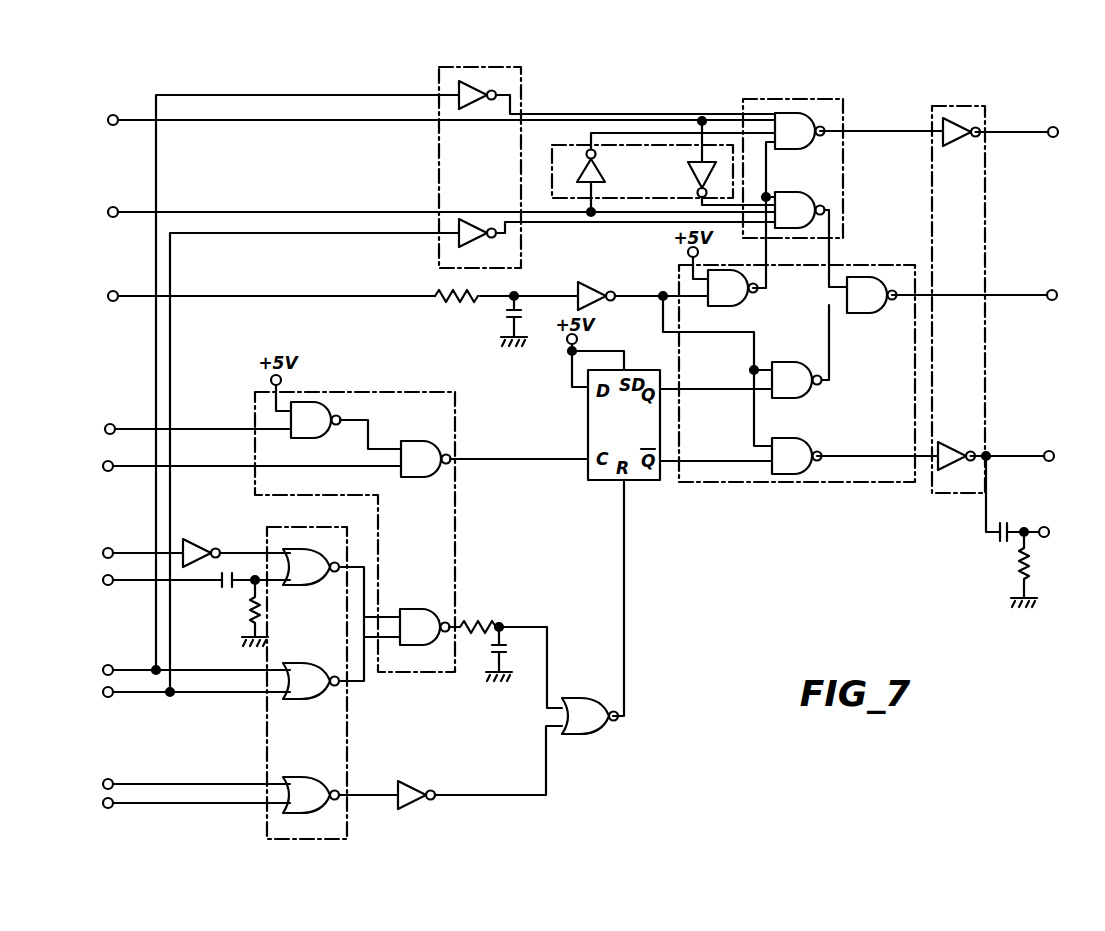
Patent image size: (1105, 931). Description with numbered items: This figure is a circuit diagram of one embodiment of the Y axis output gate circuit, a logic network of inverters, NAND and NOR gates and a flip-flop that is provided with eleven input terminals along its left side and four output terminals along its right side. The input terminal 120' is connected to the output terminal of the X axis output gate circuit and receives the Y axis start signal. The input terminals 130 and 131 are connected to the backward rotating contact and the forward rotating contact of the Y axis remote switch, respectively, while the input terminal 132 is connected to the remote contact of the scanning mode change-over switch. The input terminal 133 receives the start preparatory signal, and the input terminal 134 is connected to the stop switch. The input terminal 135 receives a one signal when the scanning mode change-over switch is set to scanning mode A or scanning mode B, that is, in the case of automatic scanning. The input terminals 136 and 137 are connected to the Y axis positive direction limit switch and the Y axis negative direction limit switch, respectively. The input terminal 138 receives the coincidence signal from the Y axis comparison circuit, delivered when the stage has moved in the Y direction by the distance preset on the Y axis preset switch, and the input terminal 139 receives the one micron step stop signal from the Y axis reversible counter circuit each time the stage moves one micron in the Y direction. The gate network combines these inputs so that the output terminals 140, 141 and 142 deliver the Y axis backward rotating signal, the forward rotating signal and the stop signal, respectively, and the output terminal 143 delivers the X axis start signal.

The input terminal 130 is at (112, 114).
The input terminal 131 is at (112, 206).
The input terminal 132 is at (110, 291).
The input terminal 120' is at (179, 399).
The input terminal 133 is at (103, 463).
The input terminal 134 is at (105, 548).
The input terminal 135 is at (104, 577).
The input terminal 136 is at (106, 665).
The input terminal 137 is at (105, 695).
The input terminal 138 is at (104, 781).
The input terminal 139 is at (105, 805).
The output terminal 140 is at (1058, 127).
The output terminal 141 is at (1057, 301).
The output terminal 142 is at (1054, 450).
The output terminal 143 is at (1046, 526).